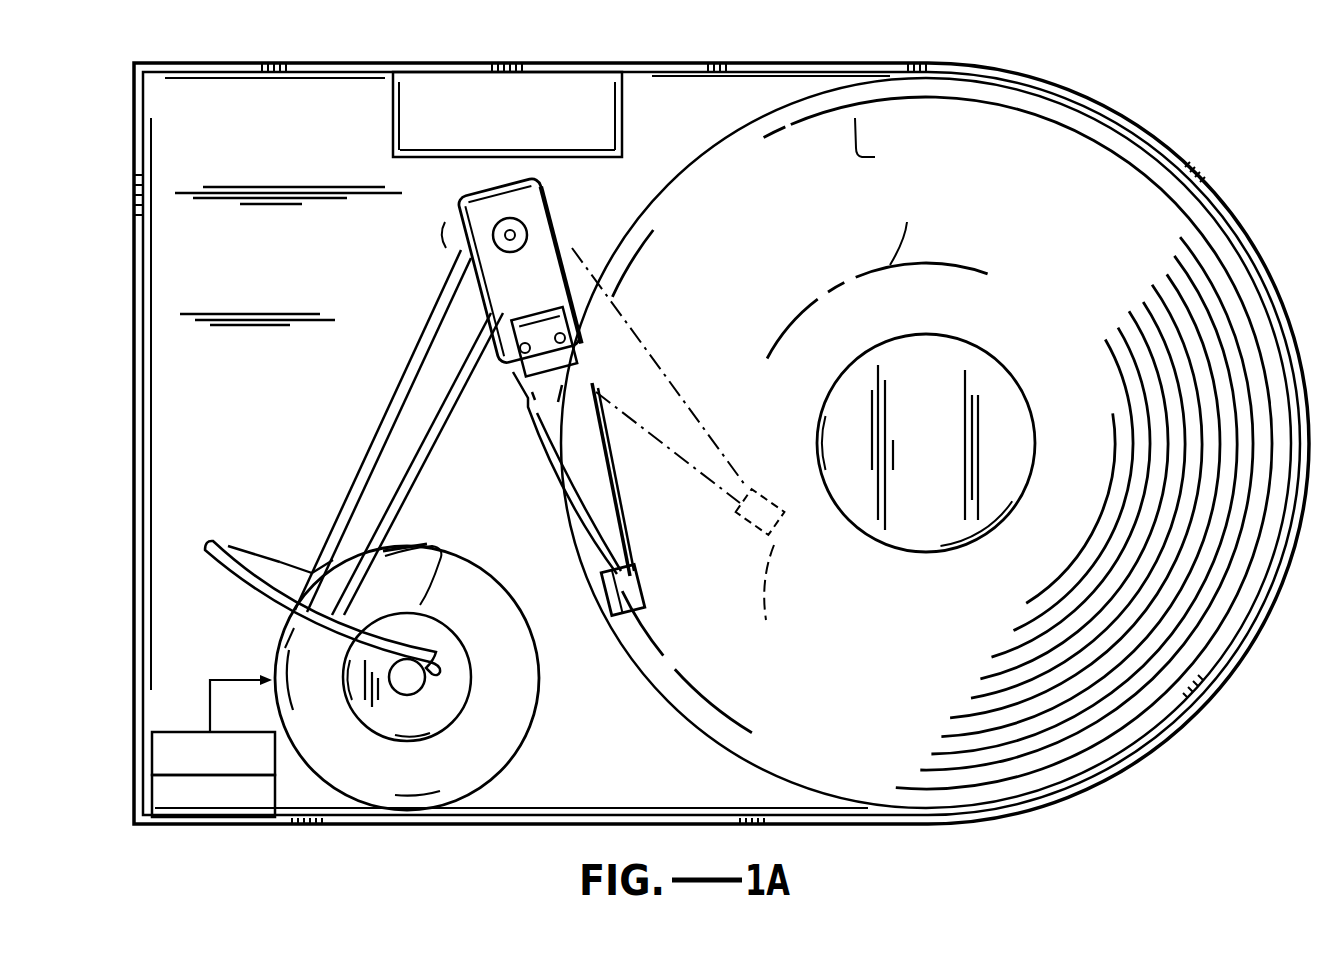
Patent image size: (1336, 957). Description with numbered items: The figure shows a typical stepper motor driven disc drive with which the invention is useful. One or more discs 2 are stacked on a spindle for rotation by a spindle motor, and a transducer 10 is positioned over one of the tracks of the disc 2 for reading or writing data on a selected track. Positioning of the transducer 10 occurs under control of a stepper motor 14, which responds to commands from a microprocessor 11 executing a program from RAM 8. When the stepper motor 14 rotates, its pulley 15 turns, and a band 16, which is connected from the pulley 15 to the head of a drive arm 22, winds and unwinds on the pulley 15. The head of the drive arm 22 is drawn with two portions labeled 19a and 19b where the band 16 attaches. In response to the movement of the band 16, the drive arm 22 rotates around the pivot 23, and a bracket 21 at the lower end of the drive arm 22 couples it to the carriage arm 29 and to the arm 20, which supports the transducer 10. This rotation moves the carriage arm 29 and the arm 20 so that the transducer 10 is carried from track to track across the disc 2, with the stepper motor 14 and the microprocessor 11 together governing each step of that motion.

The disc 2 is at (1176, 680).
The RAM 8 is at (213, 796).
The transducer 10 is at (643, 590).
The microprocessor 11 is at (213, 725).
The stepper motor 14 is at (490, 738).
The pulley 15 is at (1212, 185).
The band 16 is at (285, 610).
The spring arm 19a is at (271, 572).
The spring arm 19b is at (405, 613).
The arm 20 is at (562, 442).
The bracket 21 is at (505, 320).
The drive arm 22 is at (412, 427).
The pivot 23 is at (523, 232).
The carriage arm 29 is at (540, 270).